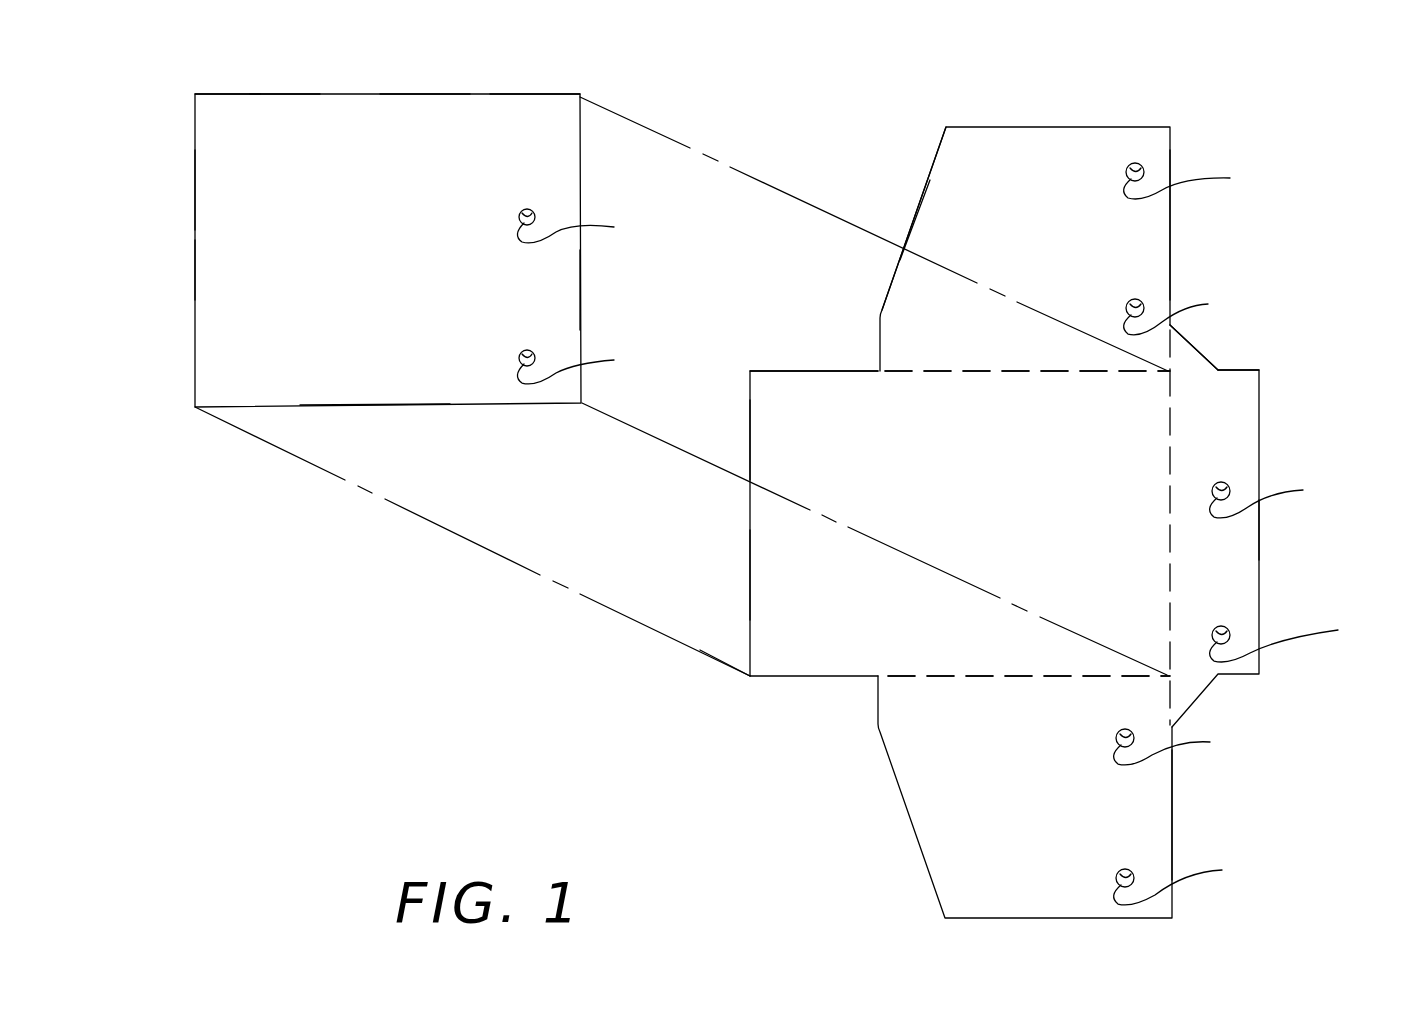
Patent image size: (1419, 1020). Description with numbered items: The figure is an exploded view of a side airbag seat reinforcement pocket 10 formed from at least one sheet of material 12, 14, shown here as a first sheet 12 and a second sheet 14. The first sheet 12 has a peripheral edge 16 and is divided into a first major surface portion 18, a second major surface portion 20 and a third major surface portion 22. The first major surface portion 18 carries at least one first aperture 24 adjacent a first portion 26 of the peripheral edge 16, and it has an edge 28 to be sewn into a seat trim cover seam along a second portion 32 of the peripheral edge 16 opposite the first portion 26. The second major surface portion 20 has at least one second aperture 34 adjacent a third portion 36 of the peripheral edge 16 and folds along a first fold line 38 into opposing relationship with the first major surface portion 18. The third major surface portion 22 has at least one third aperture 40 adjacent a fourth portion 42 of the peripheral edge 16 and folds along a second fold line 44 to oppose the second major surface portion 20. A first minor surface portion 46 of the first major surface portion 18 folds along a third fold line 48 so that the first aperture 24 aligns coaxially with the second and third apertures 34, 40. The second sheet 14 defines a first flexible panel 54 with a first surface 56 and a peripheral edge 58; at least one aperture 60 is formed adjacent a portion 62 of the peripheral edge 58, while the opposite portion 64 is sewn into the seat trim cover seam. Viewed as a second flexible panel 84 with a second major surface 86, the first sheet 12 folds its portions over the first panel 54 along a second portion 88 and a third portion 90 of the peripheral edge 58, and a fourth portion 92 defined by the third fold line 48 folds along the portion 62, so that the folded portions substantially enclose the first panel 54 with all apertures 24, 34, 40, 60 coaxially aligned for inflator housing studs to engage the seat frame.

The side airbag seat reinforcement pocket 10 is at (729, 92).
The first sheet 12 is at (820, 655).
The second sheet 14 is at (352, 112).
The peripheral edge 16 is at (940, 155).
The first major surface portion 18 is at (820, 392).
The second major surface portion 20 is at (1036, 145).
The third major surface portion 22 is at (965, 862).
The first aperture 24 is at (1291, 569).
The first portion of the peripheral edge 26 is at (1259, 585).
The edge 28 is at (750, 573).
The second portion of the peripheral edge 32 is at (748, 455).
The second aperture 34 is at (1195, 249).
The third portion of the peripheral edge 36 is at (1170, 245).
The first fold line 38 is at (943, 358).
The third aperture 40 is at (1185, 817).
The fourth portion of the peripheral edge 42 is at (1172, 796).
The second fold line 44 is at (941, 690).
The first minor surface portion 46 is at (1259, 538).
The third fold line 48 is at (1170, 412).
The first flexible panel 54 is at (430, 124).
The first surface 56 is at (282, 125).
The peripheral edge of the first panel 58 is at (540, 94).
The aperture 60 is at (583, 296).
The portion of the peripheral edge 62 is at (581, 288).
The portion of the peripheral edge 64 is at (200, 254).
The second flexible panel 84 is at (790, 622).
The second major surface 86 is at (942, 218).
The second portion of the peripheral edge 88 is at (232, 94).
The third portion of the peripheral edge 90 is at (380, 406).
The fourth portion of the second major surface 92 is at (1240, 422).